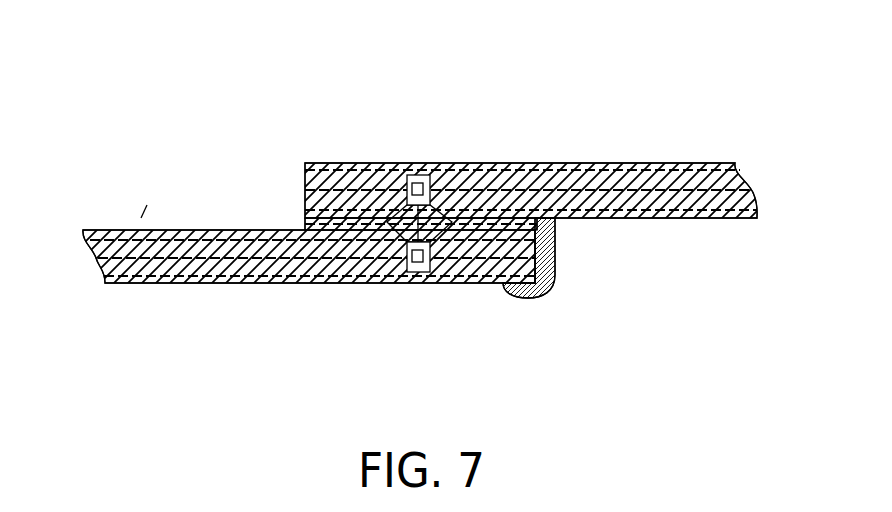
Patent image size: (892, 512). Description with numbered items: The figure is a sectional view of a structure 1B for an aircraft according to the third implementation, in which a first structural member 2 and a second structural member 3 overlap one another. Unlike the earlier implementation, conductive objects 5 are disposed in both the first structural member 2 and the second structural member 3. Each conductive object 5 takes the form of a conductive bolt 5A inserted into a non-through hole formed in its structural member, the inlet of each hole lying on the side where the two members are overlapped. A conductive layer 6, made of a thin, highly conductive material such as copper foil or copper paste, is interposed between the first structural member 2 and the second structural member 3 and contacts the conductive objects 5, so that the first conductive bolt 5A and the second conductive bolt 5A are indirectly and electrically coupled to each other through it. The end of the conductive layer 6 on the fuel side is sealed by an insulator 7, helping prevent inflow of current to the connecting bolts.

The structure for an aircraft 1B is at (729, 100).
The first structural member 2 is at (217, 230).
The second structural member 3 is at (618, 163).
The conductive object 5 is at (396, 179).
The conductive bolt 5A is at (414, 183).
The conductive layer 6 is at (305, 226).
The insulator 7 is at (556, 266).